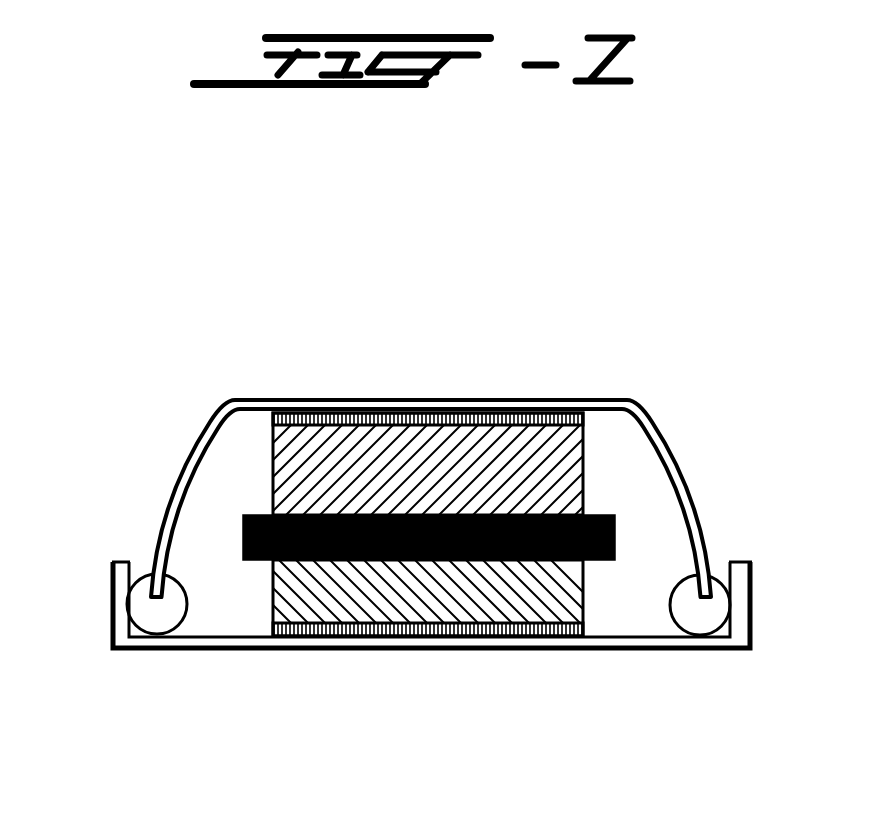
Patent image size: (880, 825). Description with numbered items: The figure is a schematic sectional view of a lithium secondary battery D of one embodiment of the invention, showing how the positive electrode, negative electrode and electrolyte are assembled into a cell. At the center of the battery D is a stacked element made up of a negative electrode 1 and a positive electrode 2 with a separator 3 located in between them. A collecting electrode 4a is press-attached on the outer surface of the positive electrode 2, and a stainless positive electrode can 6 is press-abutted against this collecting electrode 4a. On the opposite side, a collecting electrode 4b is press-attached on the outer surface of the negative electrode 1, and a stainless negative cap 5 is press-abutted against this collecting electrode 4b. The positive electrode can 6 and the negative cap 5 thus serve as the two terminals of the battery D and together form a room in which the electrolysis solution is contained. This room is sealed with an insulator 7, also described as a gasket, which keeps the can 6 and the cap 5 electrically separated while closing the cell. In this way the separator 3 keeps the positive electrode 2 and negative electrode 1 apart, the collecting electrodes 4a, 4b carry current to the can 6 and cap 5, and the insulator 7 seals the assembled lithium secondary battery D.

The negative electrode 1 is at (584, 444).
The positive electrode 2 is at (583, 590).
The separator 3 is at (613, 540).
The collecting electrode 4a is at (495, 637).
The collecting electrode 4b is at (562, 404).
The negative cap 5 is at (420, 402).
The positive electrode can 6 is at (573, 652).
The insulator 7 is at (135, 577).
The lithium secondary battery D is at (431, 533).